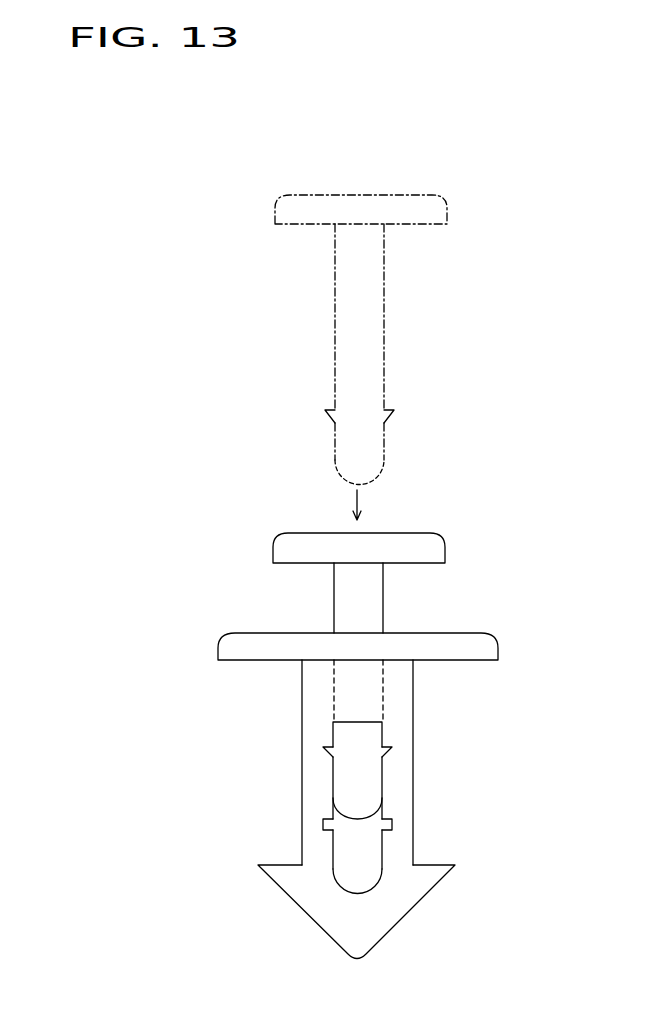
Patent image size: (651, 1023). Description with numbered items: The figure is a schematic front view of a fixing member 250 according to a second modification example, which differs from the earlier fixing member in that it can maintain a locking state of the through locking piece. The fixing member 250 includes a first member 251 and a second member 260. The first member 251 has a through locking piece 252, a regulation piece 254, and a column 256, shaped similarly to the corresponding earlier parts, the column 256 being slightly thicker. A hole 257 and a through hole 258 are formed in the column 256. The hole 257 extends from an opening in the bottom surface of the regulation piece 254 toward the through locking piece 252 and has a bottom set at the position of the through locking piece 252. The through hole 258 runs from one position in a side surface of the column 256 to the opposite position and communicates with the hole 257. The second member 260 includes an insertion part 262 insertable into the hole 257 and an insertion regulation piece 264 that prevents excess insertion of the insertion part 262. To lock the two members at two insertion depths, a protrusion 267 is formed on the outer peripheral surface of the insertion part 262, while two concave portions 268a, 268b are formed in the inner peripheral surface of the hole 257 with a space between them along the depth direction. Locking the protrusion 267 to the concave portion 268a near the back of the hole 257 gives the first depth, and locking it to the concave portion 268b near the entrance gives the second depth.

The fixing member 250 is at (250, 165).
The first member 251 is at (415, 724).
The through locking piece 252 is at (395, 915).
The regulation piece 254 is at (462, 633).
The column 256 is at (310, 697).
The hole 257 is at (380, 698).
The through hole 258 is at (372, 840).
The second member 260 is at (388, 340).
The insertion part 262 is at (340, 337).
The insertion regulation piece 264 is at (393, 196).
The protrusion 267 is at (395, 410).
The concave portion 268a is at (392, 826).
The concave portion 268b is at (325, 757).